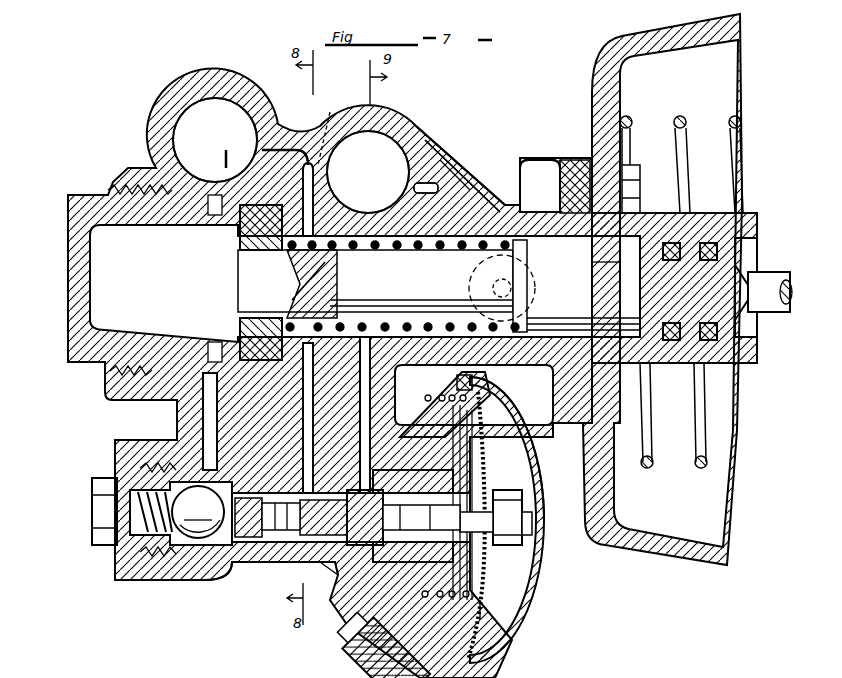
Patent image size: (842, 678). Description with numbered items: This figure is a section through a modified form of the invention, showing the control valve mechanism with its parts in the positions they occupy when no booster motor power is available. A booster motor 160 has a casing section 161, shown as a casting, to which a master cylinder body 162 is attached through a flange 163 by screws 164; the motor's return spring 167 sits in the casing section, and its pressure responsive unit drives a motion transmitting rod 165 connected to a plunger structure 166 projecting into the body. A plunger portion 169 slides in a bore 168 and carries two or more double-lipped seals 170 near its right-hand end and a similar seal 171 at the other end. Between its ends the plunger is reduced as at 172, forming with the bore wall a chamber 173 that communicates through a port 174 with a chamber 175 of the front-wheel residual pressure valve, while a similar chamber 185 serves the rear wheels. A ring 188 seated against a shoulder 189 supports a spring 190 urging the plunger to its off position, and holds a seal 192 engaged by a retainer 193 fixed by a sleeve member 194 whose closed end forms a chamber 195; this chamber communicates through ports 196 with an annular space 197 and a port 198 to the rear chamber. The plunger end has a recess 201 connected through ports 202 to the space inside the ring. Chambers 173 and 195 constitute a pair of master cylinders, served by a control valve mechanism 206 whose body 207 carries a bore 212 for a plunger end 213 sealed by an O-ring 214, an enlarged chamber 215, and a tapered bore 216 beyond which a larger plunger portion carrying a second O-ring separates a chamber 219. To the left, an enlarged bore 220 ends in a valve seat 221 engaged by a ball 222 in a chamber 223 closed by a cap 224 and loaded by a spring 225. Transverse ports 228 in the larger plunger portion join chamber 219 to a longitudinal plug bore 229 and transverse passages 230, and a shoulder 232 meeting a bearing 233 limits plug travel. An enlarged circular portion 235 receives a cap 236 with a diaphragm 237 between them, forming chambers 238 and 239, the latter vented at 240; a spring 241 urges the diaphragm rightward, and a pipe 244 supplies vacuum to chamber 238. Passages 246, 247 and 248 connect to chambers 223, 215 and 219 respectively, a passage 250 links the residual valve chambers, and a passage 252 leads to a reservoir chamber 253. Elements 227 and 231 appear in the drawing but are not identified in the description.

The booster motor 160 is at (630, 35).
The casing section 161 is at (600, 50).
The master cylinder body 162 is at (452, 190).
The flange 163 is at (583, 160).
The screws 164 is at (636, 174).
The motion transmitting rod 165 is at (782, 272).
The plunger structure 166 is at (726, 214).
The return spring 167 is at (680, 124).
The bore 168 is at (650, 213).
The plunger portion 169 is at (724, 380).
The double-lipped seals 170 is at (672, 342).
The seal 171 is at (540, 212).
The reduced plunger portion 172 is at (473, 214).
The chamber 173 is at (396, 234).
The port 174 is at (360, 234).
The chamber 175 is at (392, 140).
The chamber 185 is at (246, 100).
The ring 188 is at (241, 200).
The shoulder 189 is at (368, 172).
The spring 190 is at (474, 374).
The seal 192 is at (243, 322).
The retainer 193 is at (238, 245).
The sleeve member 194 is at (86, 195).
The chamber 195 is at (92, 272).
The ports 196 is at (217, 345).
The annular space 197 is at (216, 226).
The port 198 is at (214, 196).
The recess 201 is at (243, 271).
The ports 202 is at (298, 275).
The control valve mechanism 206 is at (141, 592).
The body 207 is at (181, 582).
The bore 212 is at (268, 545).
The plunger end 213 is at (306, 561).
The O-ring 214 is at (279, 560).
The chamber 215 is at (321, 575).
The tapered bore 216 is at (360, 580).
The chamber 219 is at (372, 565).
The enlarged bore 220 is at (255, 563).
The valve seat 221 is at (226, 578).
The ball 222 is at (198, 512).
The chamber 223 is at (192, 478).
The cap 224 is at (118, 452).
The spring 225 is at (140, 522).
The guide block 227 is at (370, 470).
The transverse ports 228 is at (426, 452).
The longitudinal plug bore 229 is at (305, 498).
The transverse passages 230 is at (256, 496).
The shaft 231 is at (366, 490).
The shoulder 232 is at (430, 470).
The bearing 233 is at (462, 395).
The enlarged circular portion 235 is at (481, 660).
The cap 236 is at (529, 575).
The diaphragm 237 is at (489, 606).
The chamber 238 is at (491, 625).
The chamber 239 is at (531, 552).
The vent 240 is at (547, 592).
The spring 241 is at (481, 455).
The pipe 244 is at (349, 662).
The passage 246 is at (186, 408).
The passage 247 is at (284, 134).
The passage 248 is at (362, 378).
The passage 250 is at (335, 130).
The passage 252 is at (431, 182).
The chamber 253 is at (537, 283).